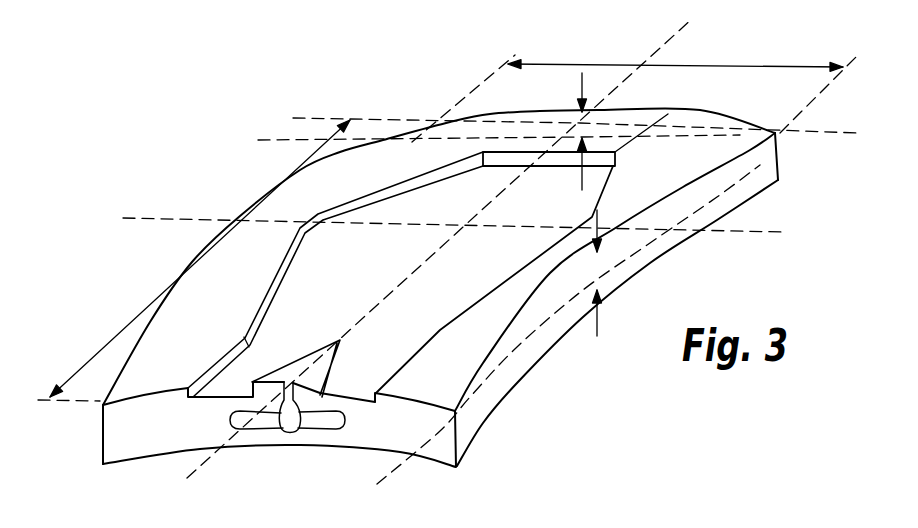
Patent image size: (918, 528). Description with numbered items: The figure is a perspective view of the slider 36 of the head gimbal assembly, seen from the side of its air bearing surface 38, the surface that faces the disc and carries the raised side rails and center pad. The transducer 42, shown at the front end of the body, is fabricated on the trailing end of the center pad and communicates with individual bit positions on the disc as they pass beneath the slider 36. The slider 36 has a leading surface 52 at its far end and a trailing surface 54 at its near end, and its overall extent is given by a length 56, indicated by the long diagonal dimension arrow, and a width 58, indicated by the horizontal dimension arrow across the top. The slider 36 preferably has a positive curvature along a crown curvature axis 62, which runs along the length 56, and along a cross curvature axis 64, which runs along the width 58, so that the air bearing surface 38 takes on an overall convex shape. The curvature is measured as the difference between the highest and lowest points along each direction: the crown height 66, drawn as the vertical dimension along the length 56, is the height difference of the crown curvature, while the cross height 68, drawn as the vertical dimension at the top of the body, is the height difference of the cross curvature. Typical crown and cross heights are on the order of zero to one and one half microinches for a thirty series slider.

The slider 36 is at (388, 93).
The air bearing surface 38 is at (254, 262).
The transducer 42 is at (285, 443).
The leading surface 52 is at (705, 117).
The trailing surface 54 is at (372, 424).
The length 56 is at (168, 284).
The width 58 is at (682, 65).
The crown curvature axis 62 is at (653, 58).
The cross curvature axis 64 is at (745, 232).
The crown height 66 is at (600, 318).
The cross height 68 is at (580, 90).